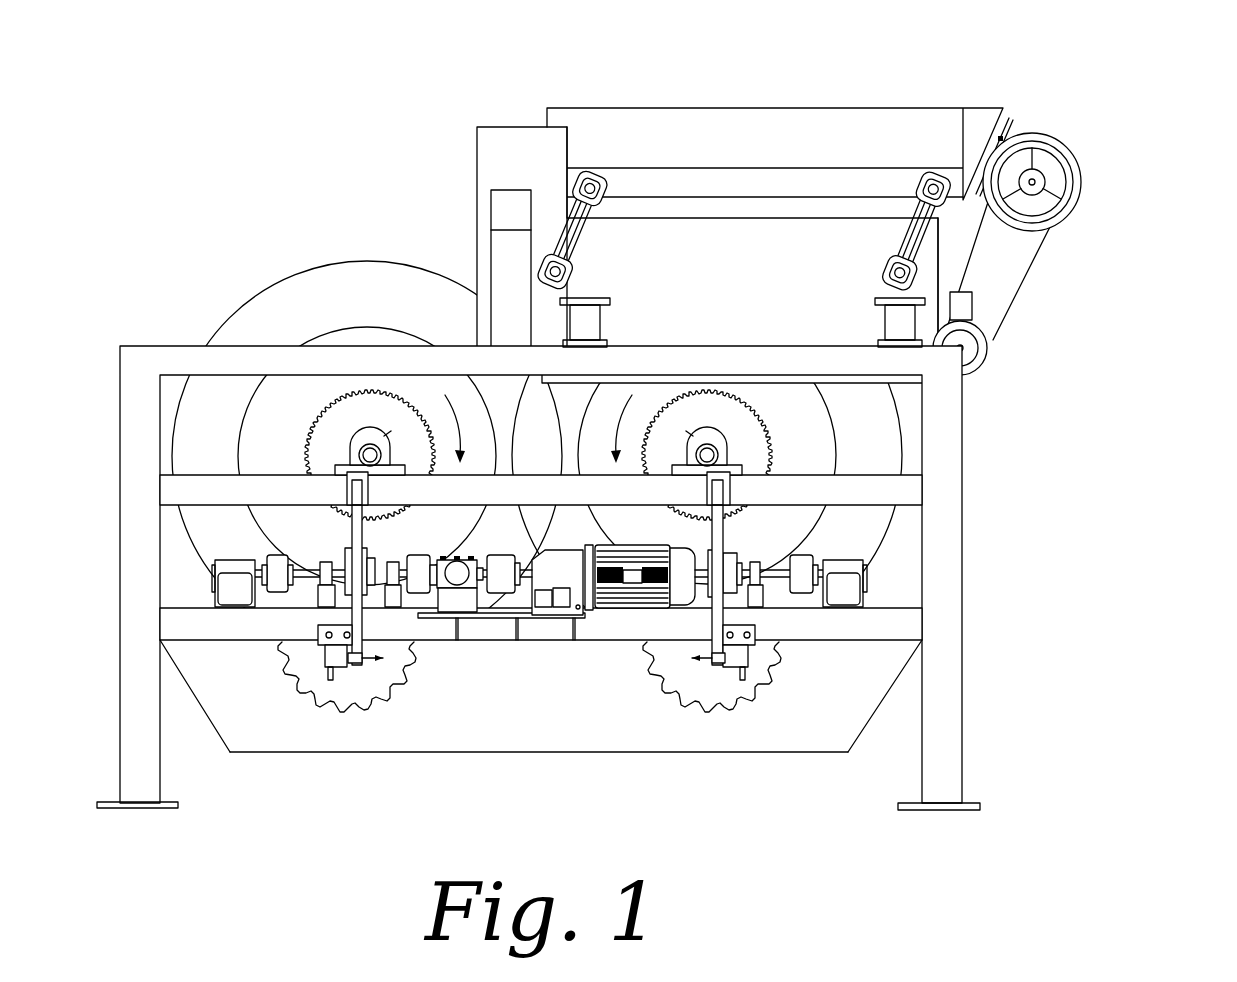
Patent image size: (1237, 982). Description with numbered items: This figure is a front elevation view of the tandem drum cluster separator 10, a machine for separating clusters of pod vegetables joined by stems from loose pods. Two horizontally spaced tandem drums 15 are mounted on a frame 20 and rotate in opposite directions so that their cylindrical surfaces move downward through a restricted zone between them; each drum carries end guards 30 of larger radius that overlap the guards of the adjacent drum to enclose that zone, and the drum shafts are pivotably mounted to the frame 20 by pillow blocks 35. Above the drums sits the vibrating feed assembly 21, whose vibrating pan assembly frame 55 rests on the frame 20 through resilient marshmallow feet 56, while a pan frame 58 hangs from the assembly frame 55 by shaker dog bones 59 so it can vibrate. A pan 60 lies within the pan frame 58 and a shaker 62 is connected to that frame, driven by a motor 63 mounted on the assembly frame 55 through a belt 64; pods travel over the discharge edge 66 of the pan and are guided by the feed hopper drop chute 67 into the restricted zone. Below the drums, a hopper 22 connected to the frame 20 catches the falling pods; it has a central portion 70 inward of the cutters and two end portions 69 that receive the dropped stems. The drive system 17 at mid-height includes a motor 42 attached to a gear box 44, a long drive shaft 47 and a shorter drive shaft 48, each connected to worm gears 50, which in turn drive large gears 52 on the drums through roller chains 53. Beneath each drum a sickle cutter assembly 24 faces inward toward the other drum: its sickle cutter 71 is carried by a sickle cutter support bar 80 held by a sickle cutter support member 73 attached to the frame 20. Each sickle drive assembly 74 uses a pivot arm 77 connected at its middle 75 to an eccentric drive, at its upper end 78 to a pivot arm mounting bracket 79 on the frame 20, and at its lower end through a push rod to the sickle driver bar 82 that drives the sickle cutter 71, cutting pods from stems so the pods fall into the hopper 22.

The tandem drum cluster separator 10 is at (260, 286).
The tandem drum 15 is at (357, 261).
The drive system 17 is at (618, 608).
The frame 20 is at (120, 543).
The vibrating feed assembly 21 is at (1010, 112).
The hopper 22 is at (630, 753).
The sickle cutter assembly 24 is at (360, 667).
The end guard 30 is at (222, 325).
The pillow block 35 is at (371, 436).
The motor 42 is at (637, 608).
The gear box 44 is at (451, 553).
The long drive shaft 47 is at (767, 588).
The shorter drive shaft 48 is at (311, 580).
The worm gear 50 is at (215, 590).
The large gear 52 is at (336, 403).
The roller chain 53 is at (303, 472).
The vibrating pan assembly frame 55 is at (939, 257).
The resilient marshmallow feet 56 is at (602, 323).
The pan frame 58 is at (744, 200).
The shaker dog bone 59 is at (580, 237).
The pan 60 is at (738, 108).
The shaker 62 is at (1078, 148).
The motor 63 is at (996, 362).
The belt 64 is at (1020, 287).
The discharge edge 66 is at (543, 107).
The feed hopper drop chute 67 is at (480, 267).
The end portion 69 is at (230, 753).
The central portion 70 is at (520, 753).
The sickle cutter 71 is at (385, 658).
The sickle cutter support member 73 is at (318, 634).
The sickle drive assembly 74 is at (357, 573).
The middle of pivot arm 75 is at (383, 557).
The pivot arm 77 is at (363, 616).
The upper end of pivot arm 78 is at (369, 489).
The pivot arm mounting bracket 79 is at (347, 490).
The sickle cutter support bar 80 is at (346, 661).
The sickle driver bar 82 is at (357, 667).